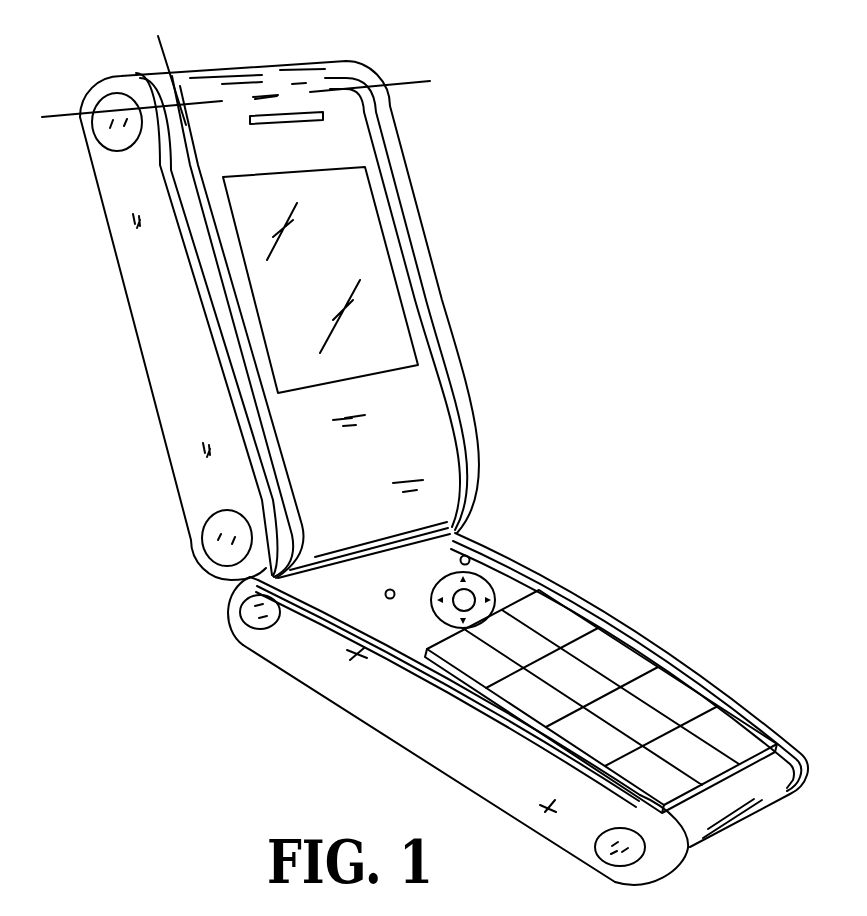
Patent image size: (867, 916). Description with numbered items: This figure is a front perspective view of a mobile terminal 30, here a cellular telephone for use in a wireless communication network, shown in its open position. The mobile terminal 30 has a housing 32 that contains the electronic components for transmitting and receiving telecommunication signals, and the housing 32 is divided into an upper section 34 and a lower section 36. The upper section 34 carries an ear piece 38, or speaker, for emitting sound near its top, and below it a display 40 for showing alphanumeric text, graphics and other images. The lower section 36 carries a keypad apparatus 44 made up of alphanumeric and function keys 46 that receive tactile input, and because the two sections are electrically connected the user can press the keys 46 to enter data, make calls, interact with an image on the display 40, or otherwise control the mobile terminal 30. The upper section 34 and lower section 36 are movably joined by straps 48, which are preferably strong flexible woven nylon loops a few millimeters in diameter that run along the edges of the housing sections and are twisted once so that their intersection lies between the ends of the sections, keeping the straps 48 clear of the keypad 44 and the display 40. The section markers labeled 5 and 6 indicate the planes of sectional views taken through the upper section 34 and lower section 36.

The mobile terminal 30 is at (488, 285).
The housing 32 is at (133, 345).
The upper section 34 is at (443, 460).
The lower section 36 is at (310, 668).
The ear piece 38 is at (302, 123).
The display 40 is at (353, 217).
The keypad apparatus 44 is at (579, 701).
The keys 46 is at (447, 672).
The straps 48 is at (423, 260).
The section line 5- 5 is at (435, 111).
The section line 6- 6 is at (150, 172).